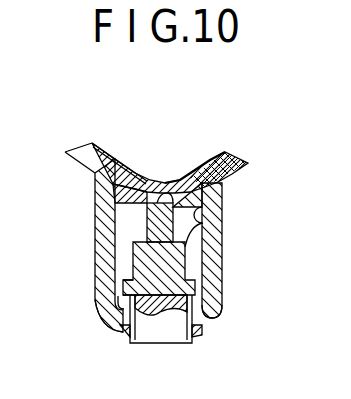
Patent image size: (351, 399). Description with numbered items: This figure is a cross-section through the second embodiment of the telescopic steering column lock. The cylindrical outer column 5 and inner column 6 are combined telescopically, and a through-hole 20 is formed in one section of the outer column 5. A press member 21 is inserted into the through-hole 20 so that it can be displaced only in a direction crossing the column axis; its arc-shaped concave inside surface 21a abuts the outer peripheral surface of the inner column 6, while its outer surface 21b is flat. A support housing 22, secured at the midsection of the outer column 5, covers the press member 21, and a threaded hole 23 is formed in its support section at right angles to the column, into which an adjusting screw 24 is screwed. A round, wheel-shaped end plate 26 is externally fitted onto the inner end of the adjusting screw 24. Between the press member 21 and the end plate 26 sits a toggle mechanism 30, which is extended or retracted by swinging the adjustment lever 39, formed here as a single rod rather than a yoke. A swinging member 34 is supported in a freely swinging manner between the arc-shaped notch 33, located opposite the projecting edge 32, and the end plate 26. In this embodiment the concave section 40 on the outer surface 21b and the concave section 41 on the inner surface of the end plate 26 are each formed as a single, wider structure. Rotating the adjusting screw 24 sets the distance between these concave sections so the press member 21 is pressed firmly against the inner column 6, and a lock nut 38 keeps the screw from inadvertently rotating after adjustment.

The outer column 5 is at (245, 160).
The inner column 6 is at (208, 167).
The through-hole 20 is at (113, 198).
The press member 21 is at (230, 190).
The inside surface 21a is at (147, 182).
The outer surface 21b is at (193, 210).
The support housing 22 is at (220, 312).
The threaded hole 23 is at (177, 320).
The adjusting screw 24 is at (107, 322).
The end plate 26 is at (122, 290).
The toggle mechanism 30 is at (126, 235).
The projecting edge 32 is at (143, 182).
The arc-shaped notch 33 is at (212, 254).
The swinging member 34 is at (140, 262).
The lock nut 38 is at (202, 330).
The adjustment lever 39 is at (222, 231).
The concave section 40 is at (168, 182).
The concave section 41 is at (215, 283).